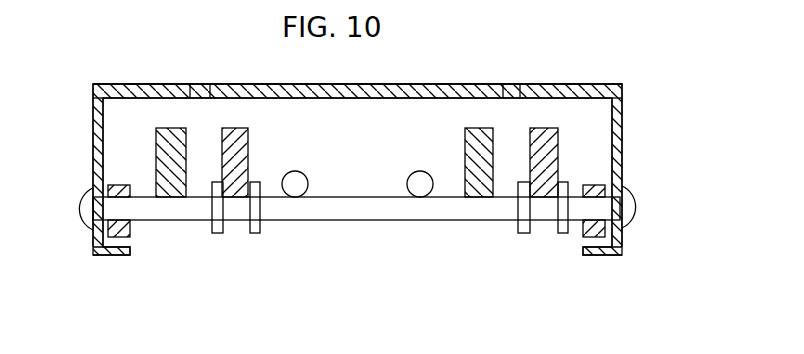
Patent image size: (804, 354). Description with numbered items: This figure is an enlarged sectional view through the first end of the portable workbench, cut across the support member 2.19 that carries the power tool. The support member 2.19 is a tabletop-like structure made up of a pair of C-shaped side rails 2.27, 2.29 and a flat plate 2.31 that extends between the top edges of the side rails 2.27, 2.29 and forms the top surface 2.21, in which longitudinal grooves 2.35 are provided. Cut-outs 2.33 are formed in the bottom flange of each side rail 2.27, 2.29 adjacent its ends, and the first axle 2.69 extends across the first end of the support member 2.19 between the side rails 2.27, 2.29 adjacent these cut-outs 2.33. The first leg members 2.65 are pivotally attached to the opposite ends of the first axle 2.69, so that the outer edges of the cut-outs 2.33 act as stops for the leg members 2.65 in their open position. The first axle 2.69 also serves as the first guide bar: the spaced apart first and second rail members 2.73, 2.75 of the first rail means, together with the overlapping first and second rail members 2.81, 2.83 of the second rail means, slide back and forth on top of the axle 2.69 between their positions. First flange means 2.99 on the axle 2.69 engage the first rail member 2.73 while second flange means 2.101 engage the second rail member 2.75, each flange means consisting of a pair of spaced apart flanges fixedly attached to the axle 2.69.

The support member 2.19 is at (537, 79).
The top surface 2.21 is at (528, 84).
The flat plate 2.31 is at (390, 84).
The longitudinal grooves 2.35 is at (206, 84).
The side rail 2.29 is at (93, 152).
The side rail 2.27 is at (680, 164).
The cut-outs 2.33 is at (113, 258).
The first leg members 2.65 is at (132, 240).
The first axle 2.69 is at (370, 205).
The second rail member 2.83 is at (172, 225).
The second rail member 2.75 is at (235, 130).
The first rail member 2.81 is at (482, 182).
The first rail member 2.73 is at (547, 140).
The second flange means 2.101 is at (256, 233).
The first flange means 2.99 is at (563, 233).